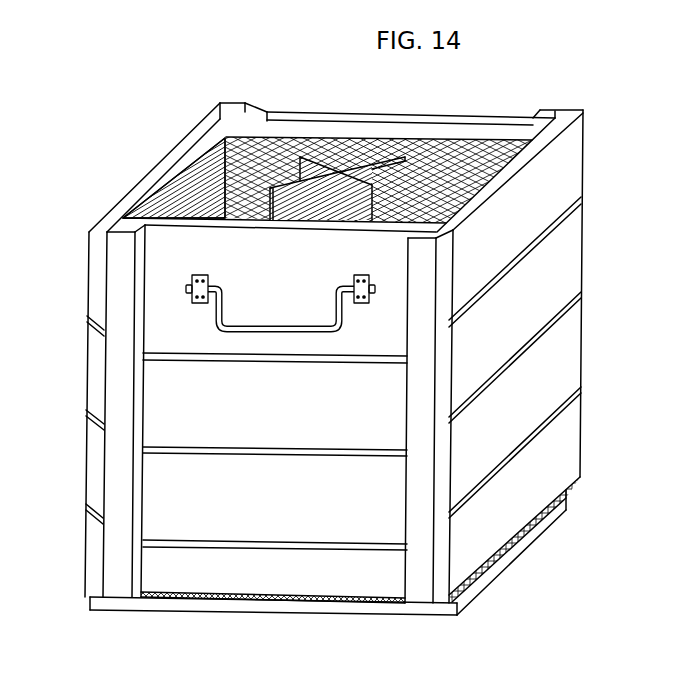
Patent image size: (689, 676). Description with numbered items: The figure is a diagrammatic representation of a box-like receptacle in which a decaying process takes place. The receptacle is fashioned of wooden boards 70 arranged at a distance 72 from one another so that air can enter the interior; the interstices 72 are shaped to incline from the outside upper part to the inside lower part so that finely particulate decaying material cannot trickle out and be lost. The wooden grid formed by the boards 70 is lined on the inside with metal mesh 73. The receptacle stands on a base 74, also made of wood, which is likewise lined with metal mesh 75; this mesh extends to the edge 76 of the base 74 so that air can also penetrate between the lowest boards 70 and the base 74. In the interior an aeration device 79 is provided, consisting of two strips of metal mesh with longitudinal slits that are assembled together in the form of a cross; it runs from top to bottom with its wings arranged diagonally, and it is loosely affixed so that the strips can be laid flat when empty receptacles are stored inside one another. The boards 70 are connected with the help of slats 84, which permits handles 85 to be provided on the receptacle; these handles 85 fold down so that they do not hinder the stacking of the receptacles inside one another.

The wooden boards 70 is at (252, 419).
The distance between boards 72 is at (100, 408).
The metal mesh 73 is at (200, 165).
The base 74 is at (213, 606).
The metal mesh 75 is at (297, 600).
The edge of the base 76 is at (567, 492).
The aeration device 79 is at (332, 162).
The slats 84 is at (130, 250).
The handles 85 is at (285, 340).